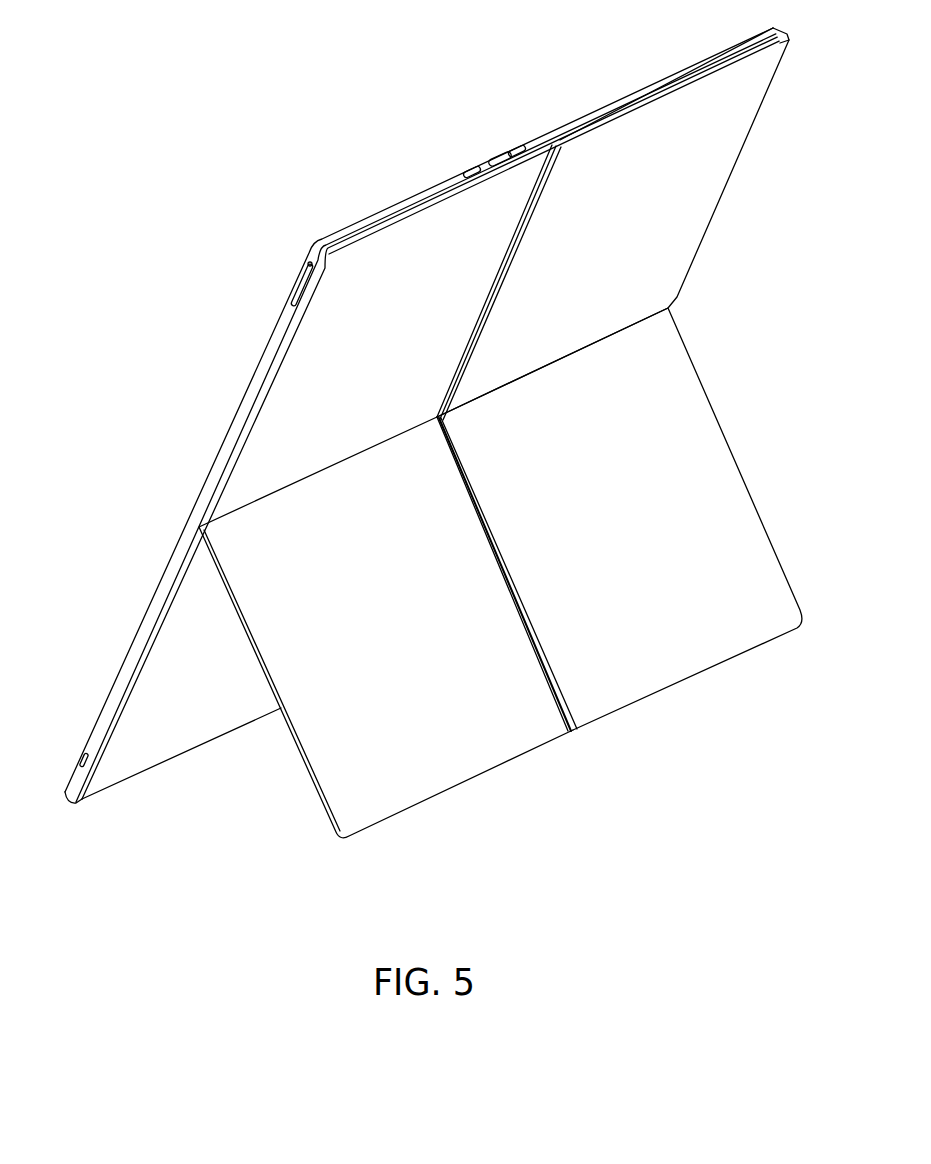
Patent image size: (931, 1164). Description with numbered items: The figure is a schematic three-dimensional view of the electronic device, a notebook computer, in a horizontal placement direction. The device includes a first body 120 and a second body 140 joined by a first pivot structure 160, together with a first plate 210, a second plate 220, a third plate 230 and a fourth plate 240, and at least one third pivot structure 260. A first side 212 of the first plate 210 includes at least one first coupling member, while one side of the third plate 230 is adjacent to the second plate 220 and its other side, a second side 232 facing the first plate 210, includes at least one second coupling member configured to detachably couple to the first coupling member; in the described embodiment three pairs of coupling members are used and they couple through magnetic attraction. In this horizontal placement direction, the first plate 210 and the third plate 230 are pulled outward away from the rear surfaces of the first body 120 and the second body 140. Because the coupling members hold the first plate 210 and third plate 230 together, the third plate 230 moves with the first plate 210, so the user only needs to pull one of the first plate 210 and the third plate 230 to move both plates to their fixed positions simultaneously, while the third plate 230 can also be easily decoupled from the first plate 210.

The first body 120 is at (630, 97).
The second body 140 is at (393, 209).
The first pivot structure 160 is at (536, 124).
The first plate 210 is at (704, 386).
The first side 212 is at (526, 578).
The second plate 220 is at (233, 421).
The third plate 230 is at (318, 791).
The second side 232 is at (513, 618).
The fourth plate 240 is at (731, 172).
The third pivot structure 260 is at (548, 197).